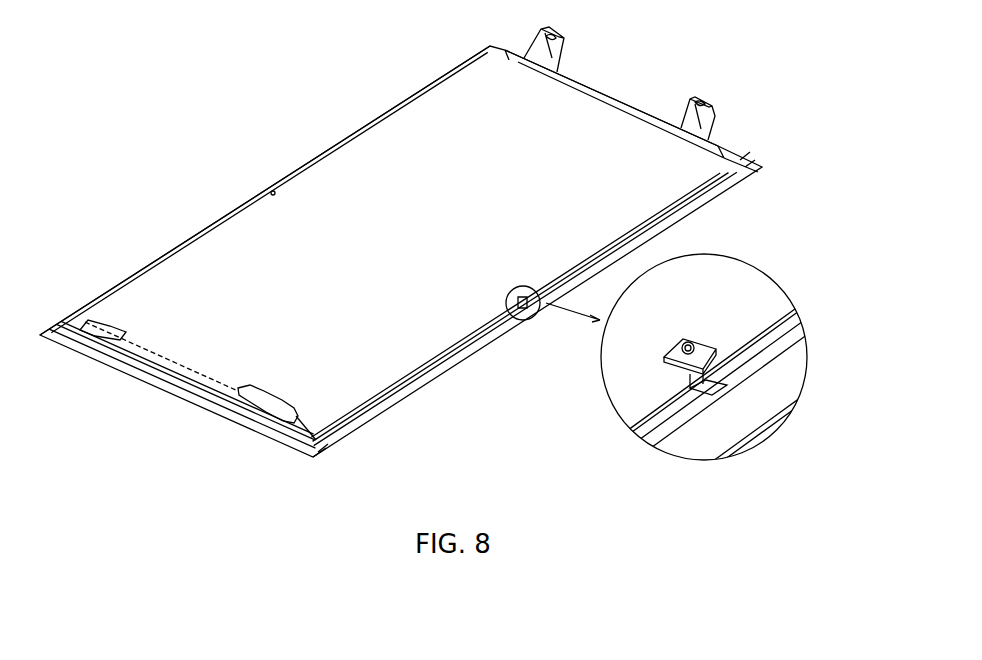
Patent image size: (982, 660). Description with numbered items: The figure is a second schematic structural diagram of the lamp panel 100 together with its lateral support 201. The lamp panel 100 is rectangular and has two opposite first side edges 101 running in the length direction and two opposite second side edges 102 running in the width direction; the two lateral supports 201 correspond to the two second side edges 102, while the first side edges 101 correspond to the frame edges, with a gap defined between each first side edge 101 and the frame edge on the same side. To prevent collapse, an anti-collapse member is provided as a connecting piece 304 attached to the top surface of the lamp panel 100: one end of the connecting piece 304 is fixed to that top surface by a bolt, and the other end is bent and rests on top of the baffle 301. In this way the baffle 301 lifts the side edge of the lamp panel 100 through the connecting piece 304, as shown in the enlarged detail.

The lamp panel 100 is at (352, 153).
The first side edge 101 is at (232, 205).
The second side edge 102 is at (613, 107).
The lateral support 201 is at (710, 107).
The baffle 301 is at (773, 397).
The connecting piece 304 is at (531, 318).